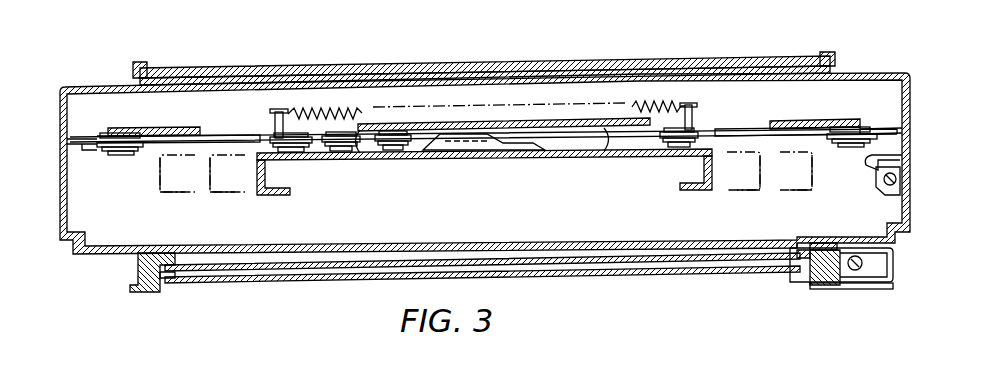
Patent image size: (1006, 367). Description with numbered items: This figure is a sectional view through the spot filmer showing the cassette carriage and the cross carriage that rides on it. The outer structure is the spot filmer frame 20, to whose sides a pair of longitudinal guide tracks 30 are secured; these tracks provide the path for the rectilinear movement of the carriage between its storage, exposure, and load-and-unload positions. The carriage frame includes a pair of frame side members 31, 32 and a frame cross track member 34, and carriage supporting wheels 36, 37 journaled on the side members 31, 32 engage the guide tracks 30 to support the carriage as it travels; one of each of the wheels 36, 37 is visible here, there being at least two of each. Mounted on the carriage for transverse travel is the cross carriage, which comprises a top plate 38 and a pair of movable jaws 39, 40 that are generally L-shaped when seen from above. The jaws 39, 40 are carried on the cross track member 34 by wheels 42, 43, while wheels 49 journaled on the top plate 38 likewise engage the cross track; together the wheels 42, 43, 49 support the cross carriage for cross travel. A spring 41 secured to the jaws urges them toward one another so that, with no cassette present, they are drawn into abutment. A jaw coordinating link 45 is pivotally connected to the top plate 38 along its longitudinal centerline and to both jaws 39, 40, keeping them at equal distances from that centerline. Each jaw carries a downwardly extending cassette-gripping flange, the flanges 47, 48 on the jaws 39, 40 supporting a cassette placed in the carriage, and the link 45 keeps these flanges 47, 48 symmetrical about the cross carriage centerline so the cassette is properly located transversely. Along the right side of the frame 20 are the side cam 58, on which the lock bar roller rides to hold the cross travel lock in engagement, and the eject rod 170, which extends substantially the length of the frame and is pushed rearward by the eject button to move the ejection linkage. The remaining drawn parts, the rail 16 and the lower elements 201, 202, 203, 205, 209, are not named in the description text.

The cover rail 16 is at (720, 62).
The spot filmer frame 20 is at (908, 207).
The longitudinal guide track 30 is at (83, 147).
The frame side member 31 is at (190, 128).
The frame side member 32 is at (830, 120).
The frame cross track member 34 is at (564, 150).
The carriage supporting wheel 36 is at (118, 151).
The carriage supporting wheel 37 is at (838, 148).
The top plate 38 is at (585, 119).
The movable jaw 39 is at (318, 152).
The movable jaw 40 is at (622, 148).
The spring 41 is at (363, 117).
The wheel 42 is at (271, 134).
The wheel 43 is at (695, 128).
The jaw coordinating link 45 is at (477, 147).
The cassette-gripping flange 47 is at (158, 188).
The cassette-gripping flange 48 is at (756, 195).
The wheel 49 is at (358, 148).
The side cam 58 is at (872, 156).
The eject rod 170 is at (900, 177).
The end block 201 is at (150, 292).
The screw 202 is at (848, 270).
The slide housing 203 is at (893, 258).
The retainer plate 205 is at (880, 289).
The spacer 209 is at (798, 241).